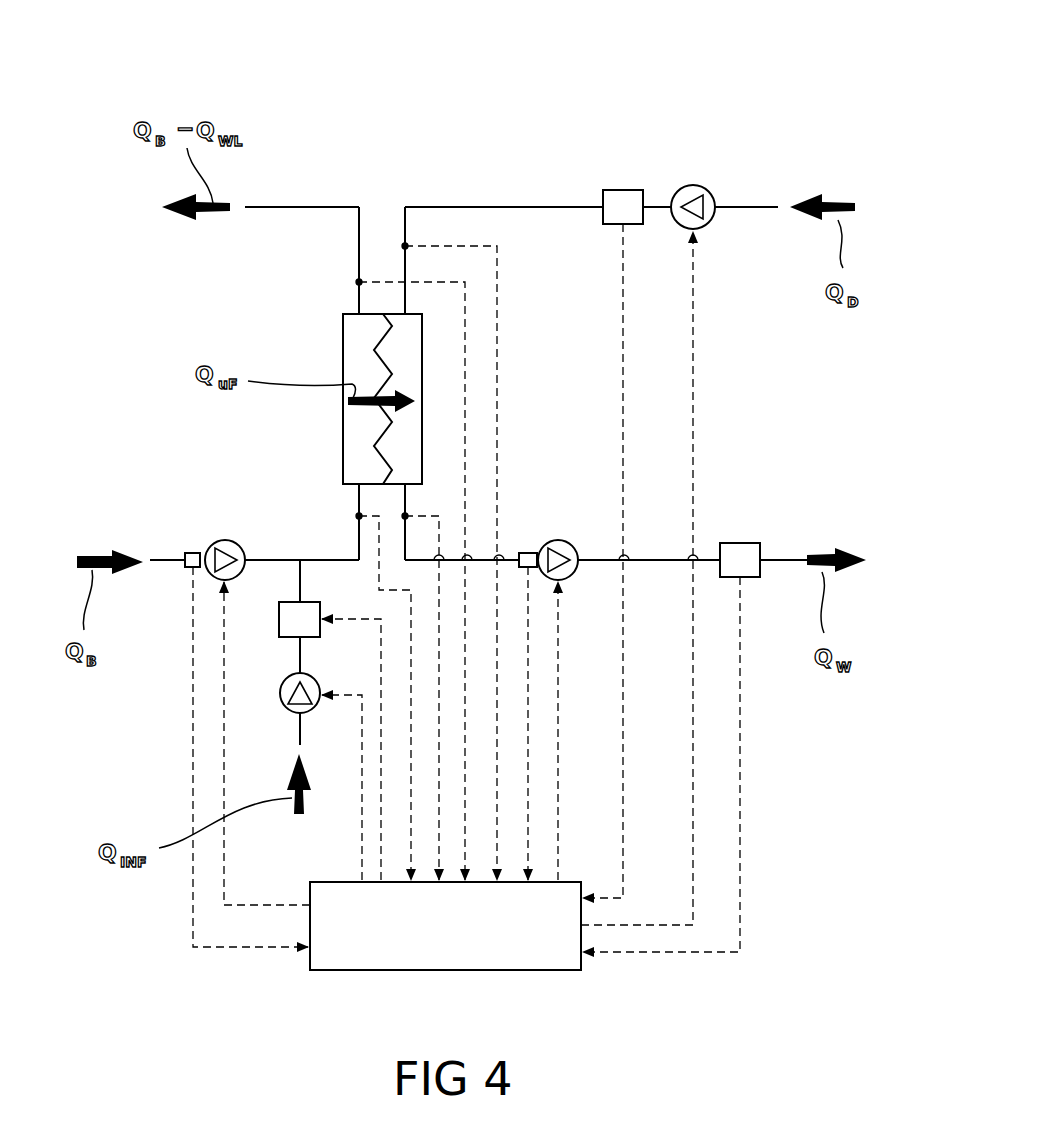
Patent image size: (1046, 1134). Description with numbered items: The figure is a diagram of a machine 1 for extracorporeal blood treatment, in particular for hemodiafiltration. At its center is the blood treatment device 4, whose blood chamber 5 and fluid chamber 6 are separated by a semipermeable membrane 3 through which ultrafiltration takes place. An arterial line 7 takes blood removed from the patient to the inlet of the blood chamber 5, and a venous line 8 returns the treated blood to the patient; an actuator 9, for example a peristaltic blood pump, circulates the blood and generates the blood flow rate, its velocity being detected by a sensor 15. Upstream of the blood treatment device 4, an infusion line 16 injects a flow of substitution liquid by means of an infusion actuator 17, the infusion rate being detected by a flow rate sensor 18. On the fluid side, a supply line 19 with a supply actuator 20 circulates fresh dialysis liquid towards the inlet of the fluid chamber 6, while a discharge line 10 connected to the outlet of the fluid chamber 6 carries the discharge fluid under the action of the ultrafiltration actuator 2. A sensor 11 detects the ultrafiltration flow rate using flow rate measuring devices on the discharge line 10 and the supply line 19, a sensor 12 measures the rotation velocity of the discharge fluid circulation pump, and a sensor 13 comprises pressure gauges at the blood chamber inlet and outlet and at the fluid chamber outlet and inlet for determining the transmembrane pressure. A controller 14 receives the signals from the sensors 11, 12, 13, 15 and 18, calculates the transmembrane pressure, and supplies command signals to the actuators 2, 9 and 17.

The machine for extracorporeal blood treatment 1 is at (386, 97).
The ultrafiltration actuator 2 is at (563, 533).
The semipermeable membrane 3 is at (372, 345).
The blood treatment device 4 is at (324, 430).
The blood chamber 5 is at (358, 363).
The fluid chamber 6 is at (408, 354).
The arterial line 7 is at (278, 550).
The venous line 8 is at (285, 203).
The blood actuator 9 is at (190, 534).
The discharge line 10 is at (701, 535).
The ultrafiltration flow rate sensor 11 is at (620, 173).
The rotation velocity sensor 12 is at (530, 535).
The transmembrane pressure sensor 13 is at (406, 245).
The controller 14 is at (466, 938).
The blood pump velocity sensor 15 is at (183, 570).
The infusion line 16 is at (281, 662).
The infusion actuator 17 is at (276, 708).
The infusion flow rate sensor 18 is at (278, 625).
The supply line 19 is at (749, 193).
The supply actuator 20 is at (695, 176).